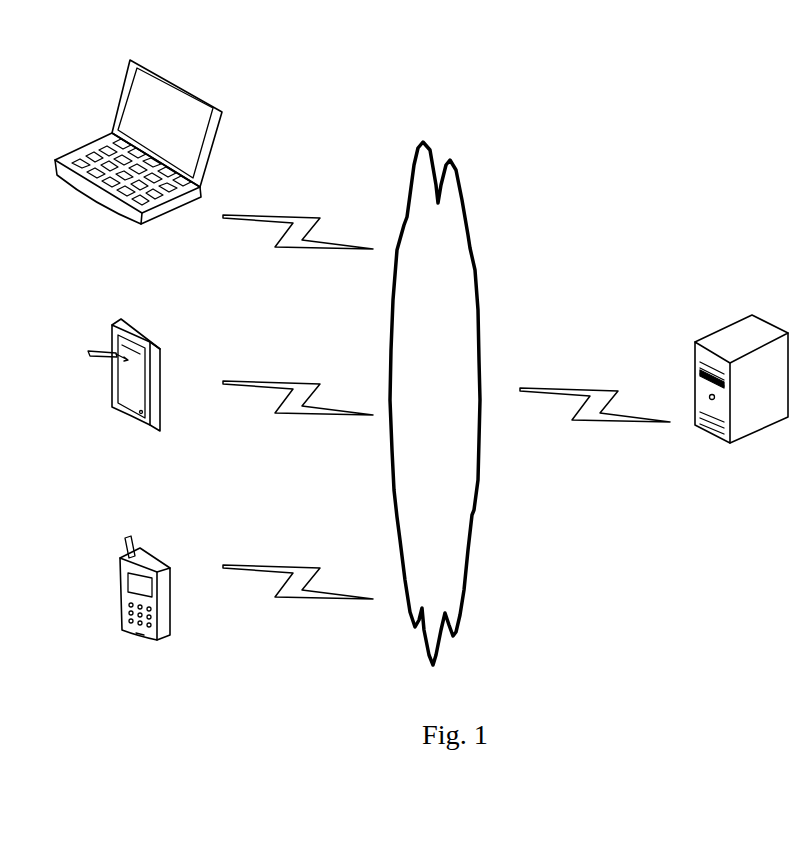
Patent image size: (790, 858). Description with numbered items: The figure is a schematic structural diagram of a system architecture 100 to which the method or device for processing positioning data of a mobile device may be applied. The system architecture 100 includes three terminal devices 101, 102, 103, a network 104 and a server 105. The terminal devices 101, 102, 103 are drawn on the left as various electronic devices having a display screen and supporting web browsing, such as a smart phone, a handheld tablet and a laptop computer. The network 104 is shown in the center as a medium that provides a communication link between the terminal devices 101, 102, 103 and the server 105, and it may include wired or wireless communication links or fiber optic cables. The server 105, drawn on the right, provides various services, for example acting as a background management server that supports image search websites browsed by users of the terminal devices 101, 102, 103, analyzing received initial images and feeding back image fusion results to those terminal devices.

The system architecture 100 is at (653, 52).
The terminal device 101 is at (145, 610).
The terminal device 102 is at (124, 395).
The terminal device 103 is at (138, 162).
The network 104 is at (435, 403).
The server 105 is at (741, 403).